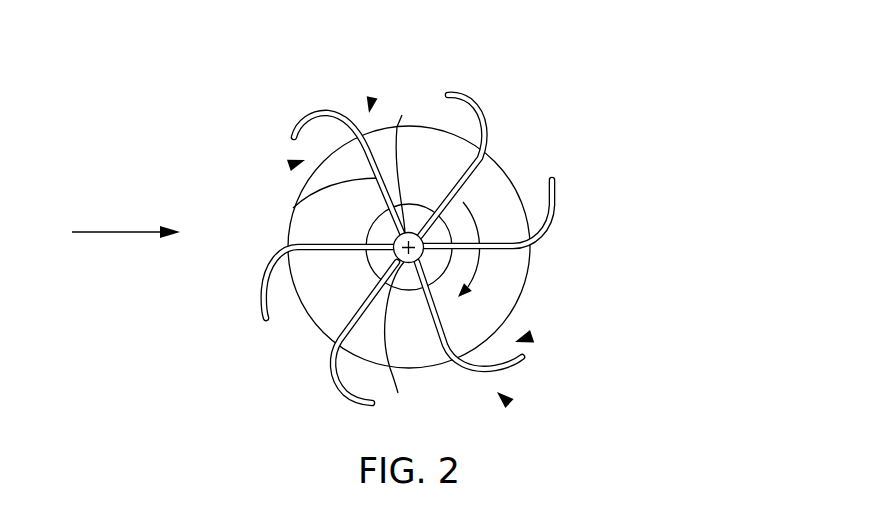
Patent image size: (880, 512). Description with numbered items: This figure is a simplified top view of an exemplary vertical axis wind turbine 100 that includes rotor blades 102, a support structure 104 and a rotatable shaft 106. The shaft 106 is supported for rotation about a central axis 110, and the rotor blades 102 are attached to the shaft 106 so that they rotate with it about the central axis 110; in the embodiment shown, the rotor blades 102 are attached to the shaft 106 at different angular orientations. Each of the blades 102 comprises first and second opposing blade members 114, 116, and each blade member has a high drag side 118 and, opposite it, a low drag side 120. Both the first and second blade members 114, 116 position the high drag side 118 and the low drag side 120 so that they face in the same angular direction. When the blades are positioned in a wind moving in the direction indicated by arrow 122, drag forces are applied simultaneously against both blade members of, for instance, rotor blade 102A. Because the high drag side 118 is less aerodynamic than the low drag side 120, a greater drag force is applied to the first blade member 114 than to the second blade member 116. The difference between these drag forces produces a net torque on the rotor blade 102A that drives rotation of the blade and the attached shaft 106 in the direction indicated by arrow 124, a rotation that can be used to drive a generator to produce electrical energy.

The vertical axis wind turbine 100 is at (471, 222).
The rotor blades 102 is at (472, 103).
The rotor blade 102A is at (316, 118).
The support structure 104 is at (498, 167).
The shaft 106 is at (408, 160).
The central axis 110 is at (408, 341).
The first blade member 114 is at (293, 208).
The second blade member 116 is at (523, 362).
The high drag side 118 is at (289, 165).
The low drag side 120 is at (372, 97).
The arrow indicating wind direction 122 is at (139, 230).
The arrow indicating rotation direction 124 is at (482, 265).